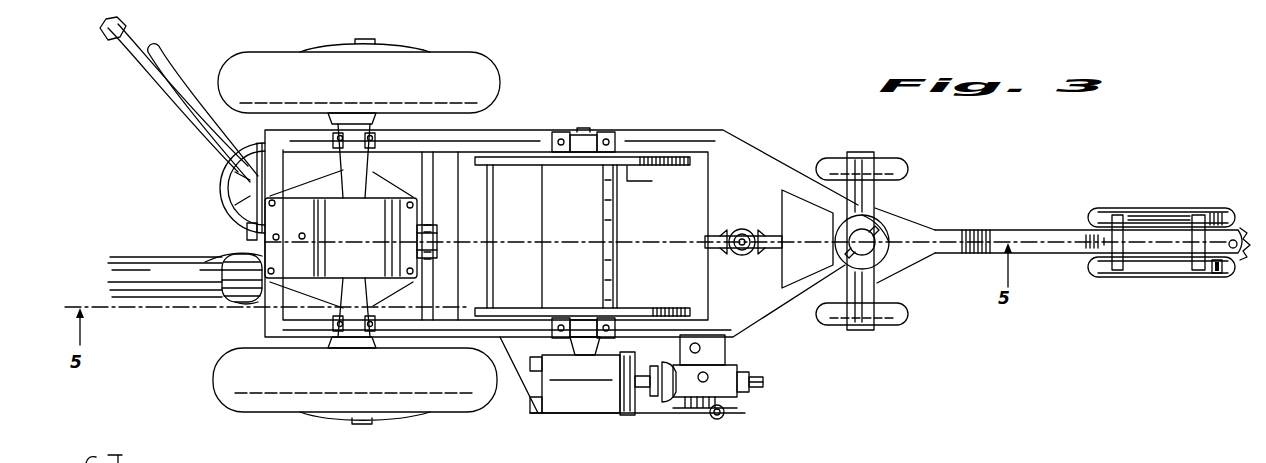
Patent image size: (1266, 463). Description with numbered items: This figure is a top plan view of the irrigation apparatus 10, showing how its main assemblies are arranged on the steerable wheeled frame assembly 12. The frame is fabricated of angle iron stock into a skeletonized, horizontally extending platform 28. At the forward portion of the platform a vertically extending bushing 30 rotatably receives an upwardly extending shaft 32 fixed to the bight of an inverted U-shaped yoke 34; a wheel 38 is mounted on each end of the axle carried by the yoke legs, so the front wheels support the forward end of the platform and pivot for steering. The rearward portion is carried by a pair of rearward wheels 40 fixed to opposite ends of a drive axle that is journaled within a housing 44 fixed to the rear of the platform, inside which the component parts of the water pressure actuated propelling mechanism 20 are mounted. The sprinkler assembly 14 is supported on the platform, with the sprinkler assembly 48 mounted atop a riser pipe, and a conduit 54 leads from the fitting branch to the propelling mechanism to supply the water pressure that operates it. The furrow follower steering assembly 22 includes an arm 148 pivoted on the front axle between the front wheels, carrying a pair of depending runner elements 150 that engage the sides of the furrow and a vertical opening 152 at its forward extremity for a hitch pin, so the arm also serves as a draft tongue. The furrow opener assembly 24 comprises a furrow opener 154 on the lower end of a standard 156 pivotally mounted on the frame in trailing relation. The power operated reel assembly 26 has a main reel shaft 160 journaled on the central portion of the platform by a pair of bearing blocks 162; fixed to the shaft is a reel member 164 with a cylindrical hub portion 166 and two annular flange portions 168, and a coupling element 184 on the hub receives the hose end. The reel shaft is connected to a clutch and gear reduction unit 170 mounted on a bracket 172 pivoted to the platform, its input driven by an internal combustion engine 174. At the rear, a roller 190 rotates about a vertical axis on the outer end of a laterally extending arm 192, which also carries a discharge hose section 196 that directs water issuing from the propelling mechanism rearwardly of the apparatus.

The apparatus 10 is at (741, 78).
The steerable wheeled frame assembly 12 is at (782, 319).
The sprinkler assembly 14 is at (739, 226).
The water pressure actuated propelling mechanism 20 is at (248, 243).
The furrow follower steering assembly 22 is at (1212, 204).
The furrow opener assembly 24 is at (212, 305).
The power operated reel assembly 26 is at (518, 322).
The platform 28 is at (662, 138).
The bushing 30 is at (870, 230).
The shaft 32 is at (873, 247).
The yoke 34 is at (858, 152).
The wheel 38 is at (900, 170).
The rearward wheels 40 is at (452, 66).
The housing 44 is at (351, 230).
The sprinkler assembly 48 is at (742, 256).
The conduit 54 is at (226, 184).
The arm 148 is at (1000, 231).
The runner elements 150 is at (1150, 262).
The vertical opening 152 is at (1214, 273).
The furrow opener 154 is at (165, 277).
The standard 156 is at (228, 258).
The main reel shaft 160 is at (585, 128).
The bearing blocks 162 is at (602, 132).
The reel member 164 is at (682, 156).
The cylindrical hub portion 166 is at (600, 214).
The annular flange portions 168 is at (518, 308).
The clutch and gear reduction unit 170 is at (581, 400).
The bracket 172 is at (668, 406).
The internal combustion engine 174 is at (755, 394).
The coupling element 184 is at (657, 180).
The roller 190 is at (130, 27).
The arm 192 is at (130, 56).
The discharge hose section 196 is at (175, 122).